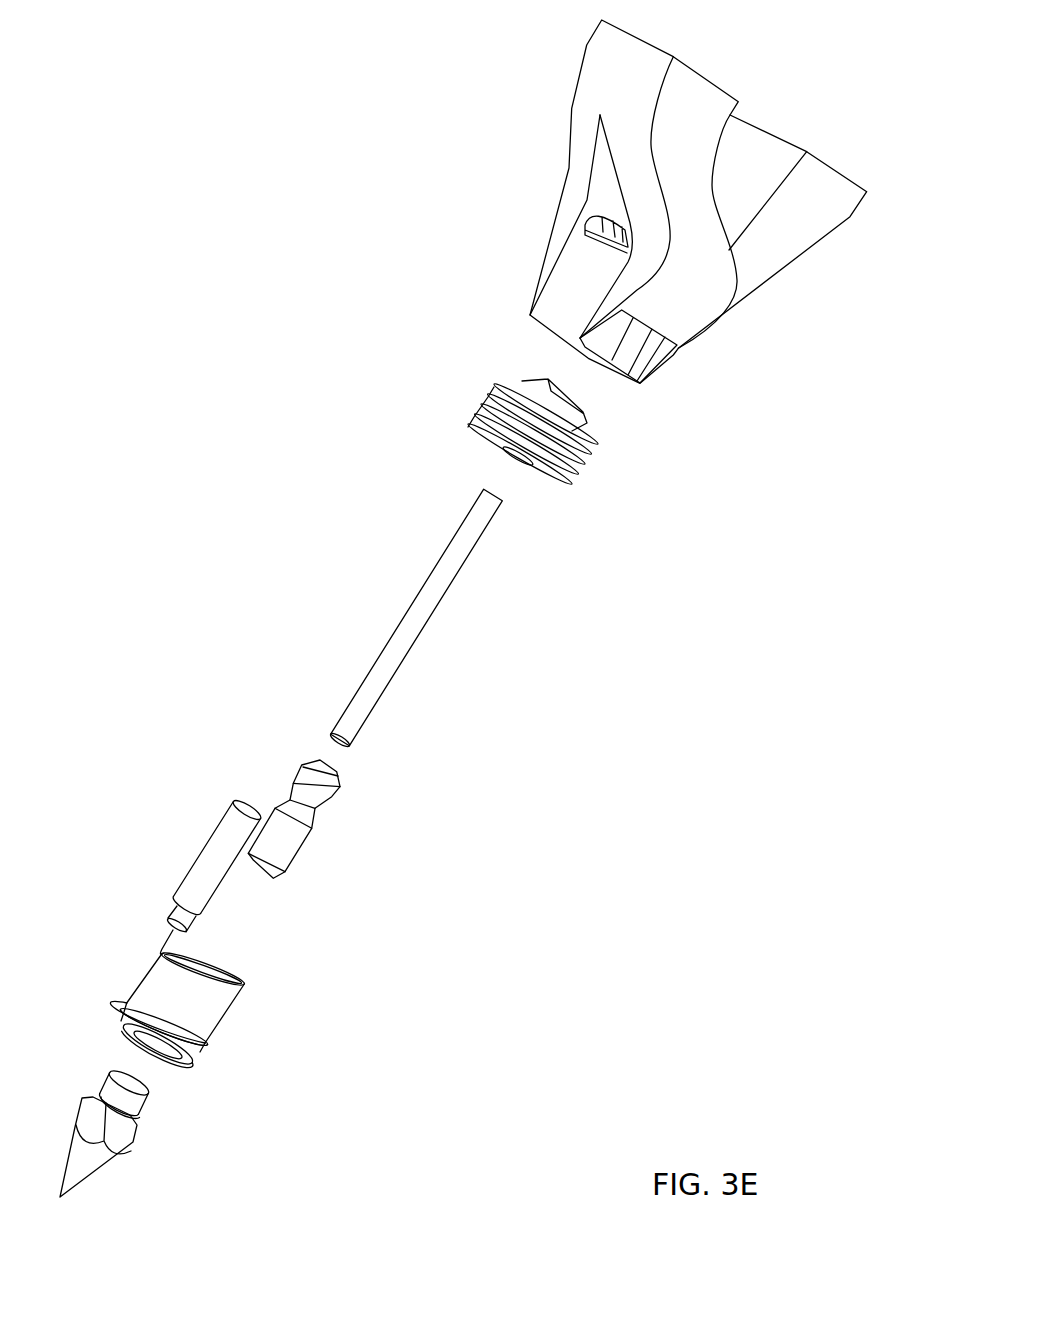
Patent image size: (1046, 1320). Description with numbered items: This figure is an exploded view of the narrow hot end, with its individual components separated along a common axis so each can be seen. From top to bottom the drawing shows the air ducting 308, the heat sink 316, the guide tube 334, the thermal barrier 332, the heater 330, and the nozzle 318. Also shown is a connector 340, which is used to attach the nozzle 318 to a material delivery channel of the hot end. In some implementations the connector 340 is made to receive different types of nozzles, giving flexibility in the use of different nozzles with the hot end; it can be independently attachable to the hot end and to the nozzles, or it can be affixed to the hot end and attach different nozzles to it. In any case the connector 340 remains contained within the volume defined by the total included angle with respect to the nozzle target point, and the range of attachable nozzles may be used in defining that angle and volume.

The air ducting 308 is at (572, 163).
The heat sink 316 is at (467, 398).
The guide tube 334 is at (430, 618).
The thermal barrier 332 is at (312, 837).
The heater 330 is at (233, 1008).
The connector 340 is at (150, 1095).
The nozzle 318 is at (133, 1138).